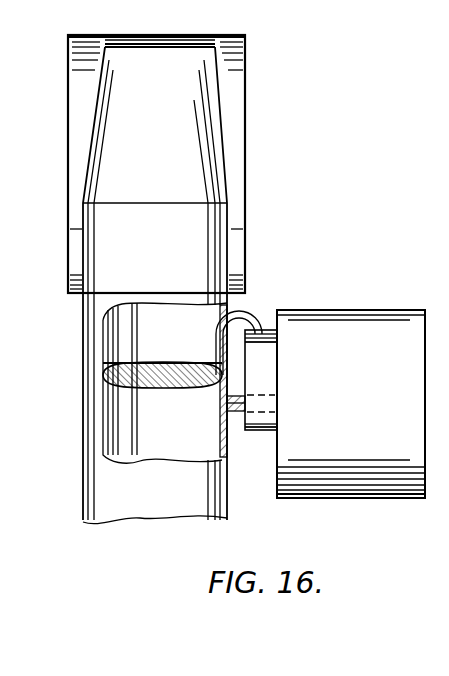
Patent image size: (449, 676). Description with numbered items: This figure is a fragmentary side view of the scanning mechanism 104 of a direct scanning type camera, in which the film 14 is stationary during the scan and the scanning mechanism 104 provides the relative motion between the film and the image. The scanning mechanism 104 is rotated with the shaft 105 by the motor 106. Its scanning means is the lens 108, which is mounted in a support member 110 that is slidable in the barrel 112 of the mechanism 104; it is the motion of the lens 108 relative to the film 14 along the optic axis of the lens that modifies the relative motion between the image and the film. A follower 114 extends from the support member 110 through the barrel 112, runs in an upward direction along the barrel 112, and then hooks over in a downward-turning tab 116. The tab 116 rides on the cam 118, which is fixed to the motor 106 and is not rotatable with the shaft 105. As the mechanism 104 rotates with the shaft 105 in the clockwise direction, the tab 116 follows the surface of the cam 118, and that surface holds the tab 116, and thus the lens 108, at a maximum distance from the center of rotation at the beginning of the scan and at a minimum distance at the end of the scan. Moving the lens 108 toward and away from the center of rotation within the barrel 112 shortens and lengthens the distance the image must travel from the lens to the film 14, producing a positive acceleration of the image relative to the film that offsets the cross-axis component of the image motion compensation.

The film 14 is at (236, 137).
The scanning mechanism 104 is at (81, 316).
The shaft 105 is at (230, 413).
The motor 106 is at (374, 372).
The lens 108 is at (162, 390).
The support member 110 is at (211, 396).
The barrel 112 is at (84, 449).
The follower 114 is at (214, 350).
The downward-turning tab 116 is at (262, 324).
The cam 118 is at (280, 382).